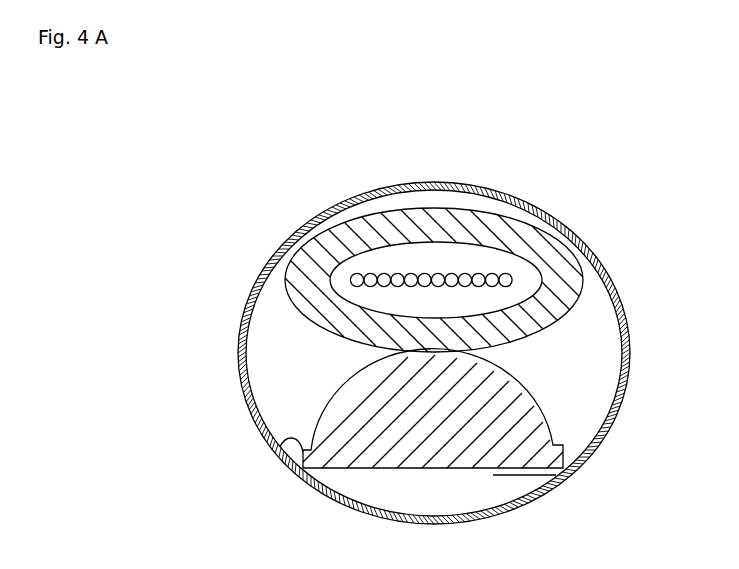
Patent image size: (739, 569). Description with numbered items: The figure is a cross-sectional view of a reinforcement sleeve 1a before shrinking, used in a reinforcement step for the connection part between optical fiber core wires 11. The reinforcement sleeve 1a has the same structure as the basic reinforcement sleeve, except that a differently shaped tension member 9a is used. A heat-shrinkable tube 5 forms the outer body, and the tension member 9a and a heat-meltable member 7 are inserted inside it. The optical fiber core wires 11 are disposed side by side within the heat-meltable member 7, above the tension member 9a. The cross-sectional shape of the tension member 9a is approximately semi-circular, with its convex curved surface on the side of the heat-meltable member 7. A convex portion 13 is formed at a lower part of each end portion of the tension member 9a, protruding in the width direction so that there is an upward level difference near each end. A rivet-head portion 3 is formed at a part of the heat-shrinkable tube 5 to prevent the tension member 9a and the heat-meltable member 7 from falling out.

The reinforcement sleeve 1a is at (542, 178).
The rivet-head portion 3 is at (560, 478).
The heat-shrinkable tube 5 is at (586, 244).
The heat-meltable member 7 is at (550, 285).
The tension member 9a is at (538, 418).
The optical fiber core wires 11 is at (410, 278).
The convex portion 13 is at (280, 447).